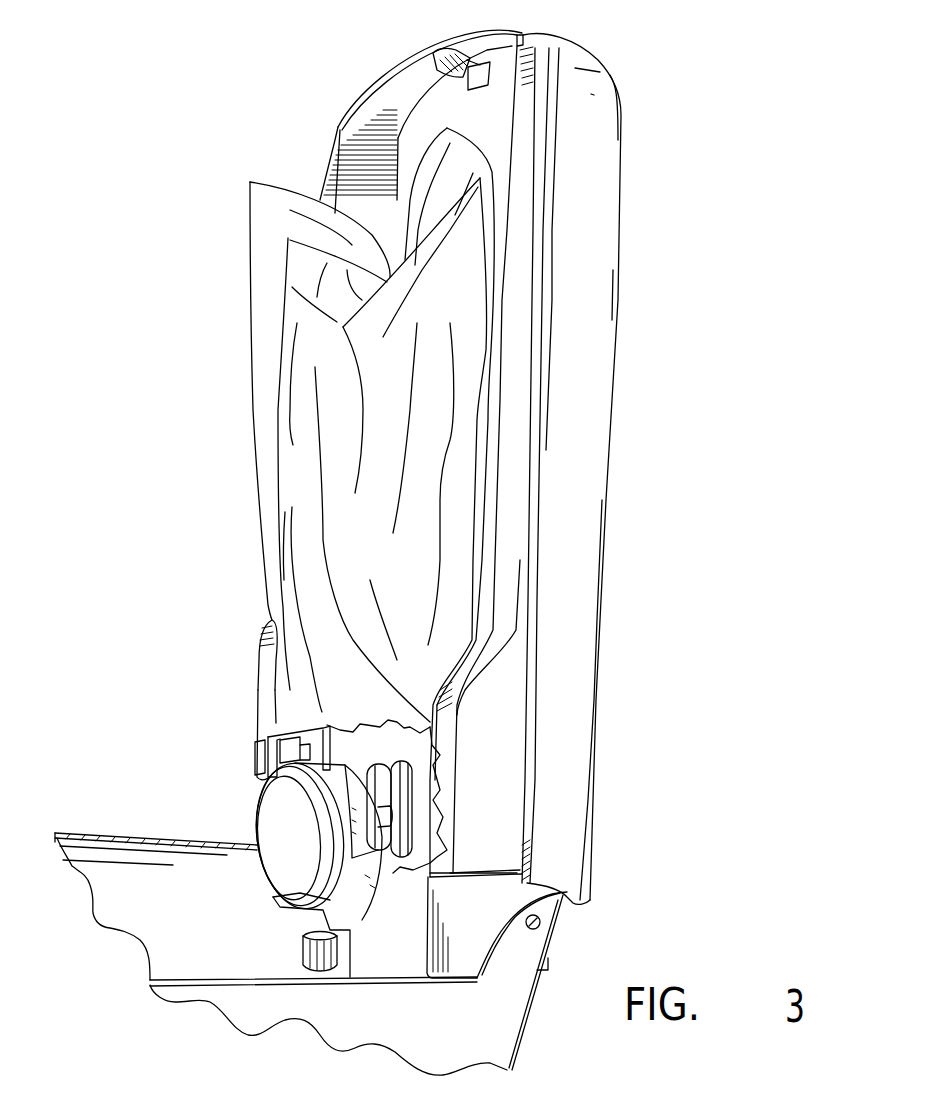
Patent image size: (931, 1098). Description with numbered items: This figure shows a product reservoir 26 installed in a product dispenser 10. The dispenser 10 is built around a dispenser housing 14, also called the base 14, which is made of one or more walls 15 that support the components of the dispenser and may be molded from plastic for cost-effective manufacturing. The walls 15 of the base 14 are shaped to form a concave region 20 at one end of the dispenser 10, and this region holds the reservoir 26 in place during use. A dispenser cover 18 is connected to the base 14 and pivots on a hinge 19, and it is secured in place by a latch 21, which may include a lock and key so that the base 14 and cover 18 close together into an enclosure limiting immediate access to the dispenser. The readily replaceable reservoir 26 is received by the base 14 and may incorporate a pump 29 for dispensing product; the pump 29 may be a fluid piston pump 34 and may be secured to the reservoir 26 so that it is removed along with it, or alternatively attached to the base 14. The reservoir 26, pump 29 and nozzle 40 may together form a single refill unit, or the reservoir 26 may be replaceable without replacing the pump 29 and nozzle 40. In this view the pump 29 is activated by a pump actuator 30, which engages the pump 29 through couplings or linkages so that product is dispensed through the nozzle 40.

The product dispenser 10 is at (652, 262).
The dispenser housing 14 is at (588, 558).
The walls 15 is at (587, 423).
The dispenser cover 18 is at (503, 1013).
The hinge 19 is at (560, 912).
The concave region 20 is at (356, 752).
The latch 21 is at (435, 63).
The product reservoir 26 is at (313, 633).
The pump 29 is at (282, 847).
The pump actuator 30 is at (380, 792).
The fluid piston pump 34 is at (277, 823).
The nozzle 40 is at (305, 955).